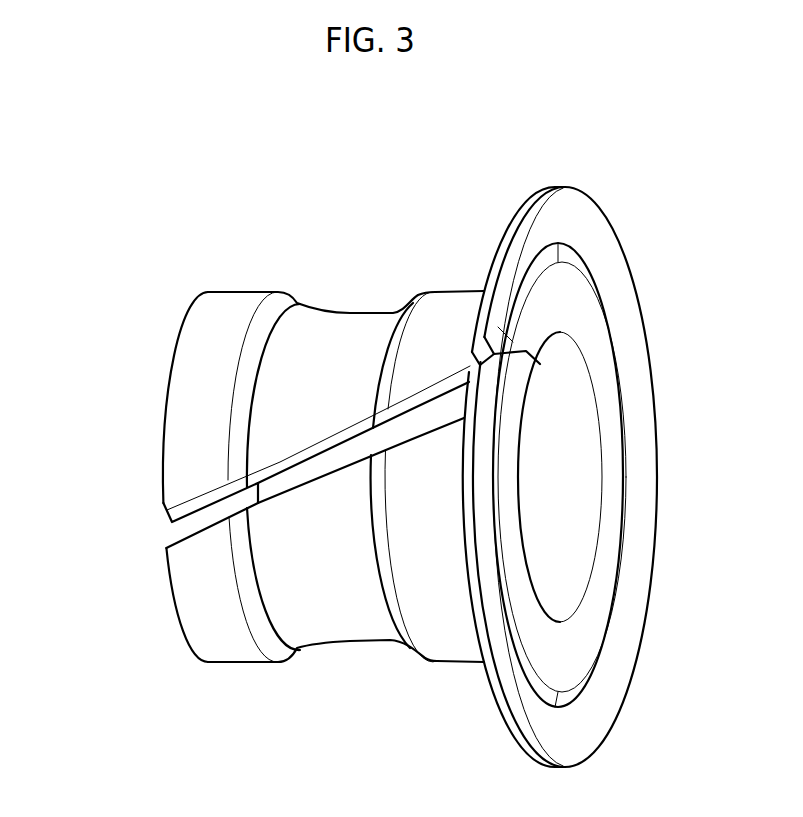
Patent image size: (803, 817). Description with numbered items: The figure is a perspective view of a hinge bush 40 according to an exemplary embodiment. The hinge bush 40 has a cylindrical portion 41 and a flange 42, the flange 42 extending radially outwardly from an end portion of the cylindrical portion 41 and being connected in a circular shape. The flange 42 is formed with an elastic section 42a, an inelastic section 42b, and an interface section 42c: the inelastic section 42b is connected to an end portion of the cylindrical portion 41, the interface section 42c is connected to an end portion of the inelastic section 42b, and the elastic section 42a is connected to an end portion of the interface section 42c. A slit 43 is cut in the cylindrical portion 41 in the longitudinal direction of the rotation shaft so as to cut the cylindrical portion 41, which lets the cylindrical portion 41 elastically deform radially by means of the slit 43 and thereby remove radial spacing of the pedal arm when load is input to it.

The hinge bush 40 is at (414, 188).
The cylindrical portion 41 is at (345, 325).
The flange 42 is at (658, 414).
The elastic section 42a is at (647, 523).
The inelastic section 42b is at (612, 458).
The interface section 42c is at (560, 693).
The slit 43 is at (195, 532).